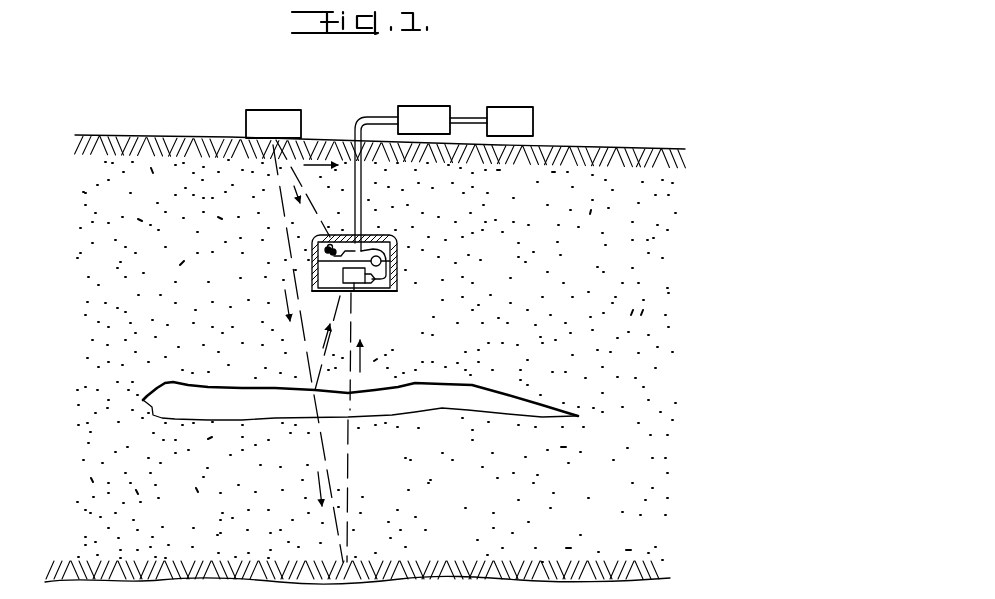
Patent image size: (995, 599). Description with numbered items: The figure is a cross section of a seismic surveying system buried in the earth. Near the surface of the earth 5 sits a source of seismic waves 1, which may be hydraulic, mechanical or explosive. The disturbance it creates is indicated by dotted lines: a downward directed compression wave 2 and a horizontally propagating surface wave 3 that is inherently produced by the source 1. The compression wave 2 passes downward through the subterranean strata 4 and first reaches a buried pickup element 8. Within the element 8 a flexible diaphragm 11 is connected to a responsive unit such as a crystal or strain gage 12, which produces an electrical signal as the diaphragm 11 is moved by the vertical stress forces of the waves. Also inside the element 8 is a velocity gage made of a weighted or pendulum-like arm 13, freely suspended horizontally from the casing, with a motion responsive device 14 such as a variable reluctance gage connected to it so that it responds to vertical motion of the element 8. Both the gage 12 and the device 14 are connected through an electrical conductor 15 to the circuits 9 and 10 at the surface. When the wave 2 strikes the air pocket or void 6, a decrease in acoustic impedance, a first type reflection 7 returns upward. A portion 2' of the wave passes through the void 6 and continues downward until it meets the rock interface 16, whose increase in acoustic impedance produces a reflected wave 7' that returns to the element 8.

The source of seismic waves 1 is at (303, 113).
The downward directed compression wave 2 is at (306, 265).
The portion of the original compressional wave 2' is at (312, 478).
The horizontally propagating surface wave 3 is at (323, 141).
The subterranean strata 4 is at (596, 266).
The surface of the earth 5 is at (612, 148).
The air pocket or void 6 is at (227, 395).
The first type reflection 7 is at (337, 346).
The reflected wave 7' is at (368, 449).
The buried pickup element 8 is at (397, 290).
The circuit 9 is at (447, 106).
The circuit 10 is at (533, 107).
The flexible diaphragm 11 is at (373, 294).
The crystal or strain gage 12 is at (343, 272).
The weighted or pendulum-like arm 13 is at (390, 261).
The motion responsive device 14 is at (318, 261).
The electrical conductor 15 is at (362, 218).
The rock interface 16 is at (437, 561).